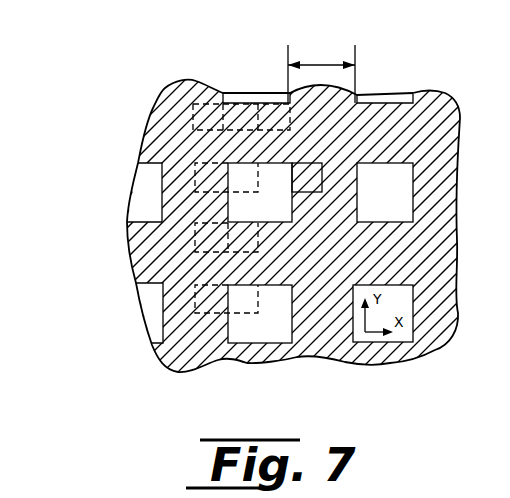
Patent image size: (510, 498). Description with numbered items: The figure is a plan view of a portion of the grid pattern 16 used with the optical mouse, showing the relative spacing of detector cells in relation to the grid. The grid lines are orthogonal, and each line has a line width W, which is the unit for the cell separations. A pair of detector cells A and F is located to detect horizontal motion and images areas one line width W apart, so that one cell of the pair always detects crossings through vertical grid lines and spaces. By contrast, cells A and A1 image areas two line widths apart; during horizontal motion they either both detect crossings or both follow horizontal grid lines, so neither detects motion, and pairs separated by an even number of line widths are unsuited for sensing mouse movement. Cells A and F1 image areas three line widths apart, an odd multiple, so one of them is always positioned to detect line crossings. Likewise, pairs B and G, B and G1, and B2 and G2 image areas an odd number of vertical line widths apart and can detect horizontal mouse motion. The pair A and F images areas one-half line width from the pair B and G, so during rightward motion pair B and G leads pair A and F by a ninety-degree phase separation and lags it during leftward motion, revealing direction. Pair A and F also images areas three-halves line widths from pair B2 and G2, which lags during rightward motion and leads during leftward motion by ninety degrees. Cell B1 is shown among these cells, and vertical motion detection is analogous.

The grid pattern 16 is at (136, 125).
The detector cell A is at (191, 106).
The detector cell A1 is at (196, 243).
The detector cell B is at (247, 92).
The detector cell B1 is at (262, 249).
The detector cell B2 is at (363, 94).
The detector cell F is at (195, 170).
The detector cell F1 is at (196, 300).
The detector cell G is at (238, 194).
The detector cell G1 is at (238, 315).
The detector cell G2 is at (322, 183).
The line width W is at (323, 64).